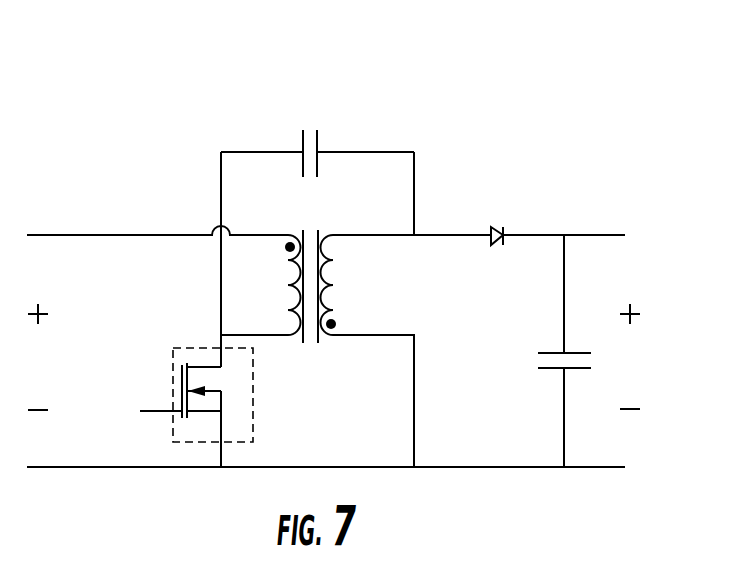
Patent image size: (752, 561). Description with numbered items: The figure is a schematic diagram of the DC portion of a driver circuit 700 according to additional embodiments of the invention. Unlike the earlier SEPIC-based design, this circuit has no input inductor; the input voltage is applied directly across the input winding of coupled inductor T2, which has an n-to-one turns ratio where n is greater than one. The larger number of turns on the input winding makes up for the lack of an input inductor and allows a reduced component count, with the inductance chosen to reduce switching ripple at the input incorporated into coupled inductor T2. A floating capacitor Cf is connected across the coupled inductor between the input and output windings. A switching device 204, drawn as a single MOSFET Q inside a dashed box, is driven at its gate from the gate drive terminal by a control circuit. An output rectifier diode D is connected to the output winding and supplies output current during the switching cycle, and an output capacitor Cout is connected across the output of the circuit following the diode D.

The driver circuit 700 is at (636, 85).
The switching device 204 is at (253, 387).
The switching transistor Q is at (214, 415).
The coupled inductor T2 is at (298, 304).
The diode D is at (497, 220).
The floating capacitor Cf is at (311, 132).
The output capacitor Cout is at (539, 360).